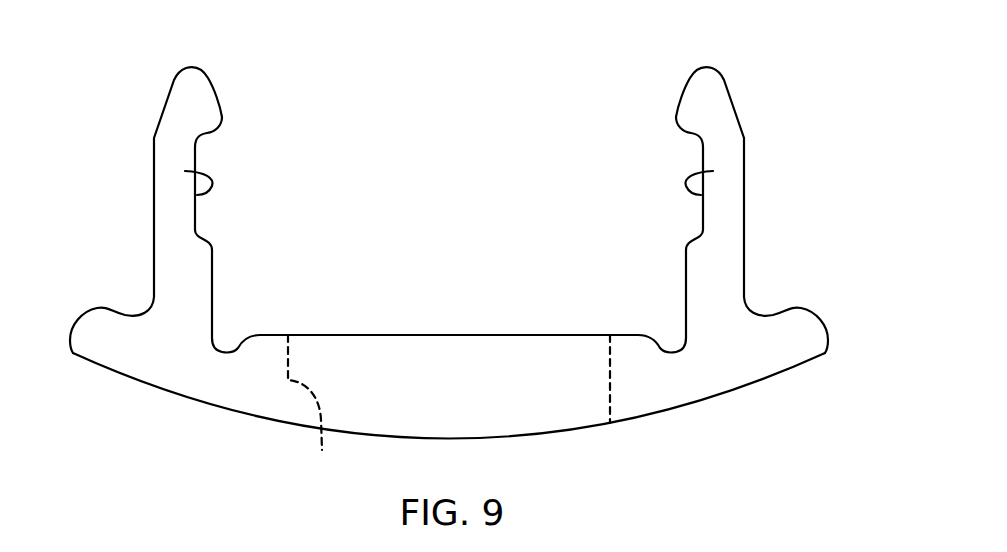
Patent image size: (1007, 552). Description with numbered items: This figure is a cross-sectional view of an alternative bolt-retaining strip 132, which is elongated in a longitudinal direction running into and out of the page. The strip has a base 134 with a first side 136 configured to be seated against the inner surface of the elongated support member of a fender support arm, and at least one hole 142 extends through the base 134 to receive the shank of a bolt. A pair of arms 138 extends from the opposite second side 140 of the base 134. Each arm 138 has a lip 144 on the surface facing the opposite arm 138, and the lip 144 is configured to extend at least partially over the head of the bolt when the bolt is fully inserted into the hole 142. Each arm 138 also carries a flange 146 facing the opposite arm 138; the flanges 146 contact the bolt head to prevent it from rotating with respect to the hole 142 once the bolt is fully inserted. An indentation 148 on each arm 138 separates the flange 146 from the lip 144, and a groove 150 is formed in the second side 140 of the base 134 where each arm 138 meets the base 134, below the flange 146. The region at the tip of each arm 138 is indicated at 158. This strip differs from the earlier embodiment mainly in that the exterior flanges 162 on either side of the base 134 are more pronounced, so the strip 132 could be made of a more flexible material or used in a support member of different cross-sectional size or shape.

The bolt-retaining strip 132 is at (762, 88).
The base 134 is at (447, 360).
The first side 136 is at (568, 442).
The arm 138 is at (174, 213).
The second side 140 is at (372, 330).
The hole 142 is at (449, 407).
The lip 144 is at (222, 128).
The flange 146 is at (213, 272).
The indentation 148 is at (185, 171).
The groove 150 is at (234, 348).
The head 158 is at (218, 86).
The exterior flange 162 is at (87, 337).